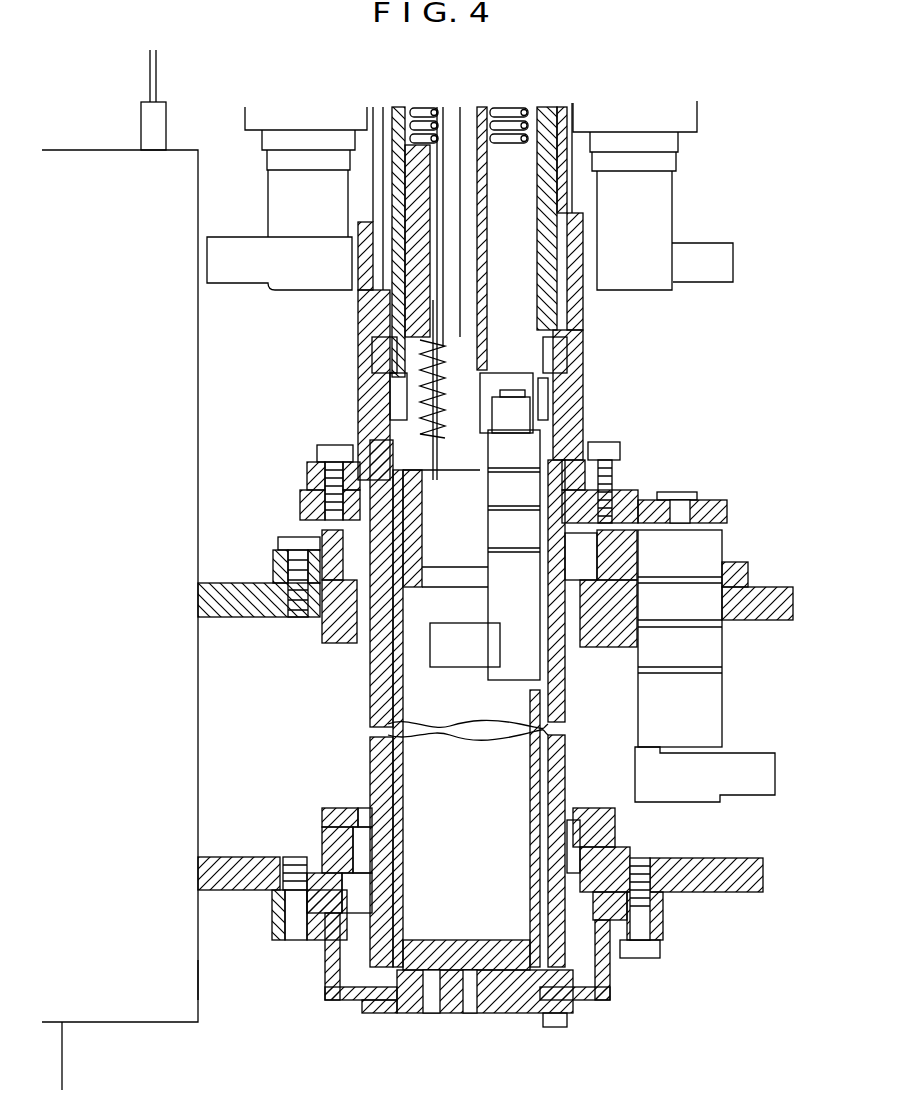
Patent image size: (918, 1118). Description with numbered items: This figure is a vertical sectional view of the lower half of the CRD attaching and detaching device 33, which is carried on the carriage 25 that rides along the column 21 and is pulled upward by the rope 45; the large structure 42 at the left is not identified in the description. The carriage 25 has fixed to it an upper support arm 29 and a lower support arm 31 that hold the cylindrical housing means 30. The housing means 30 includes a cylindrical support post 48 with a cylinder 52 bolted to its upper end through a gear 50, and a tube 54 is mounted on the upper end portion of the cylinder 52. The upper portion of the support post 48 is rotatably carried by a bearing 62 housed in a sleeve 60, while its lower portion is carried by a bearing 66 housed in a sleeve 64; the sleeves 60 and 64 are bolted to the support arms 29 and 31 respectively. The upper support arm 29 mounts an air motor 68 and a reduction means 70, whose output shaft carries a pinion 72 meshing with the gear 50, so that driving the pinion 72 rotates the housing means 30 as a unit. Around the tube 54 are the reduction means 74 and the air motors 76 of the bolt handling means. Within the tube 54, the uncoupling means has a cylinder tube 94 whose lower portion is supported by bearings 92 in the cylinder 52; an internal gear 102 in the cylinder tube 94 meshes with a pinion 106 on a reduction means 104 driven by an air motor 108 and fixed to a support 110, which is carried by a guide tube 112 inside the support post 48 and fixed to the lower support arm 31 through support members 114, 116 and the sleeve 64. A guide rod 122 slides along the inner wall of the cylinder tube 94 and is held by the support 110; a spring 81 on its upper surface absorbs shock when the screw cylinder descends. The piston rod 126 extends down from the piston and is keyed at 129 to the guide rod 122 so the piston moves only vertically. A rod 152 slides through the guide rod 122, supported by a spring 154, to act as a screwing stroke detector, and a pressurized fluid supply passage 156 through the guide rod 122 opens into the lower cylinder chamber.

The column 21 is at (68, 1052).
The carriage 25 is at (198, 975).
The upper support arm 29 is at (238, 617).
The cylindrical housing means 30 is at (368, 680).
The lower support arm 31 is at (250, 868).
The CRD attaching and detaching device 33 is at (714, 334).
The tank wall 42 is at (198, 460).
The rope 45 is at (157, 74).
The cylindrical support post 48 is at (372, 716).
The gear 50 is at (620, 486).
The cylinder 52 is at (366, 398).
The tube 54 is at (376, 118).
The sleeve 60 is at (330, 640).
The bearing 62 is at (345, 552).
The sleeve 64 is at (340, 808).
The bearing 66 is at (600, 850).
The air motor 68 is at (752, 757).
The reduction means 70 is at (722, 688).
The pinion 72 is at (690, 500).
The reduction means 74 is at (697, 116).
The air motor 76 is at (672, 207).
The spring 81 is at (538, 110).
The bearings 92 is at (372, 360).
The cylinder tube 94 is at (562, 338).
The internal gear 102 is at (548, 405).
The reduction means 104 is at (540, 452).
The pinion 106 is at (492, 414).
The air motor 108 is at (545, 668).
The support 110 is at (422, 510).
The guide tube 112 is at (403, 812).
The support member 114 is at (400, 1010).
The support member 116 is at (325, 995).
The guide rod 122 is at (402, 306).
The piston rod 126 is at (440, 108).
The key 129 is at (488, 297).
The rod 152 is at (430, 188).
The spring 154 is at (418, 418).
The pressurized fluid supply passage 156 is at (382, 290).